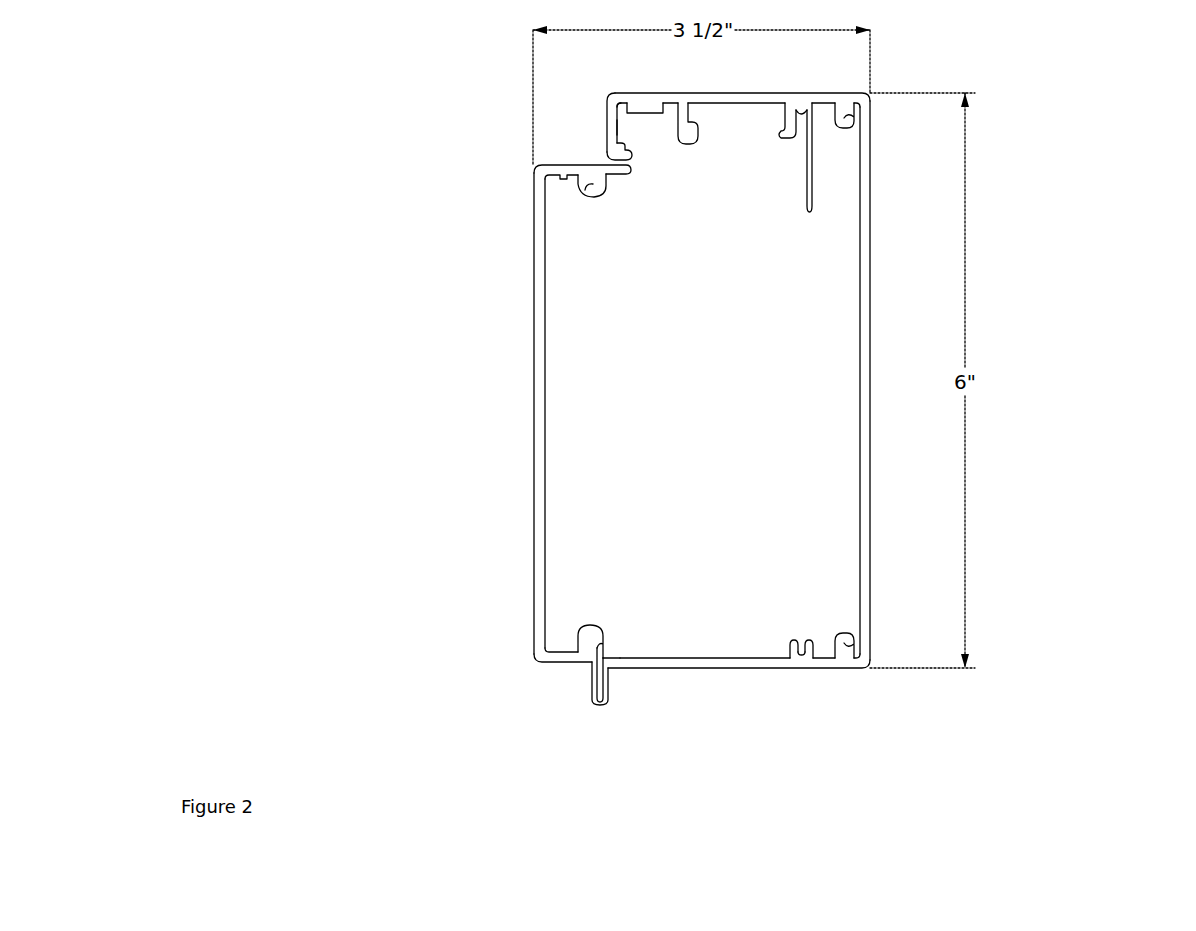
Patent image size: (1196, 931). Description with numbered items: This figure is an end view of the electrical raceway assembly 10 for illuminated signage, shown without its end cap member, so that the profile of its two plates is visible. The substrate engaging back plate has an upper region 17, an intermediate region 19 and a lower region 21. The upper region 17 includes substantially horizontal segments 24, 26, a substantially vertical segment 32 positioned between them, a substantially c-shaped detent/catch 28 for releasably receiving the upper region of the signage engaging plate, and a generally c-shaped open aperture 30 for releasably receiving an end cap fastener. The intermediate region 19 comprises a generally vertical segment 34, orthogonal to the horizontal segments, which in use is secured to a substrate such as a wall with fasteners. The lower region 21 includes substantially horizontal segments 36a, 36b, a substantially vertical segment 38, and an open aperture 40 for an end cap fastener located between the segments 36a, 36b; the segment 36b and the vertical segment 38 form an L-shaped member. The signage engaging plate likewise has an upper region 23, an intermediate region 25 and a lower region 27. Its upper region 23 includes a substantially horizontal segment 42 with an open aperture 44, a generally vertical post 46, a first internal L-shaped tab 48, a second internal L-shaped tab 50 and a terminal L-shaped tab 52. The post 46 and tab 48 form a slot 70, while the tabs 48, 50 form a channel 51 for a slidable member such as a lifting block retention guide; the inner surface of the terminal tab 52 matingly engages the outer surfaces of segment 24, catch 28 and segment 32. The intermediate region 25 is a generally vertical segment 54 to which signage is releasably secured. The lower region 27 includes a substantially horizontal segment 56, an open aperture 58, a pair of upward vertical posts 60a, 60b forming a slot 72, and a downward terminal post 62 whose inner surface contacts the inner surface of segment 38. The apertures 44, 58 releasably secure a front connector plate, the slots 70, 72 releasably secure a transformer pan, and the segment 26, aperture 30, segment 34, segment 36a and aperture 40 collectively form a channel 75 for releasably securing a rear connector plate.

The raceway assembly 10 is at (927, 733).
The upper region 17 is at (354, 95).
The intermediate region 19 is at (354, 363).
The lower region 21 is at (354, 660).
The upper region 23 is at (1084, 95).
The intermediate region 25 is at (1084, 363).
The lower region 27 is at (1084, 660).
The substantially horizontal segment 24 is at (640, 113).
The substantially horizontal segment 26 is at (582, 163).
The substantially c-shaped detent/catch 28 is at (641, 178).
The open aperture 30 is at (592, 186).
The substantially vertical segment 32 is at (627, 130).
The generally vertical segment 34 is at (534, 400).
The substantially horizontal segment 36a is at (568, 663).
The substantially horizontal segment 36b is at (612, 652).
The substantially vertical segment 38 is at (594, 686).
The open aperture 40 is at (592, 634).
The substantially horizontal segment 42 is at (740, 93).
The open aperture 44 is at (852, 115).
The generally vertical post 46 is at (809, 168).
The first internal L-shaped tab 48 is at (792, 138).
The second internal L-shaped tab 50 is at (688, 144).
The channel 51 is at (740, 140).
The terminal L-shaped tab 52 is at (595, 133).
The generally vertical segment 54 is at (870, 400).
The substantially horizontal segment 56 is at (722, 668).
The open aperture 58 is at (854, 647).
The generally upward vertical post 60a is at (790, 641).
The generally upward vertical post 60b is at (808, 640).
The generally downward terminal post 62 is at (609, 688).
The slot 70 is at (802, 110).
The slot 72 is at (802, 641).
The channel 75 is at (548, 352).